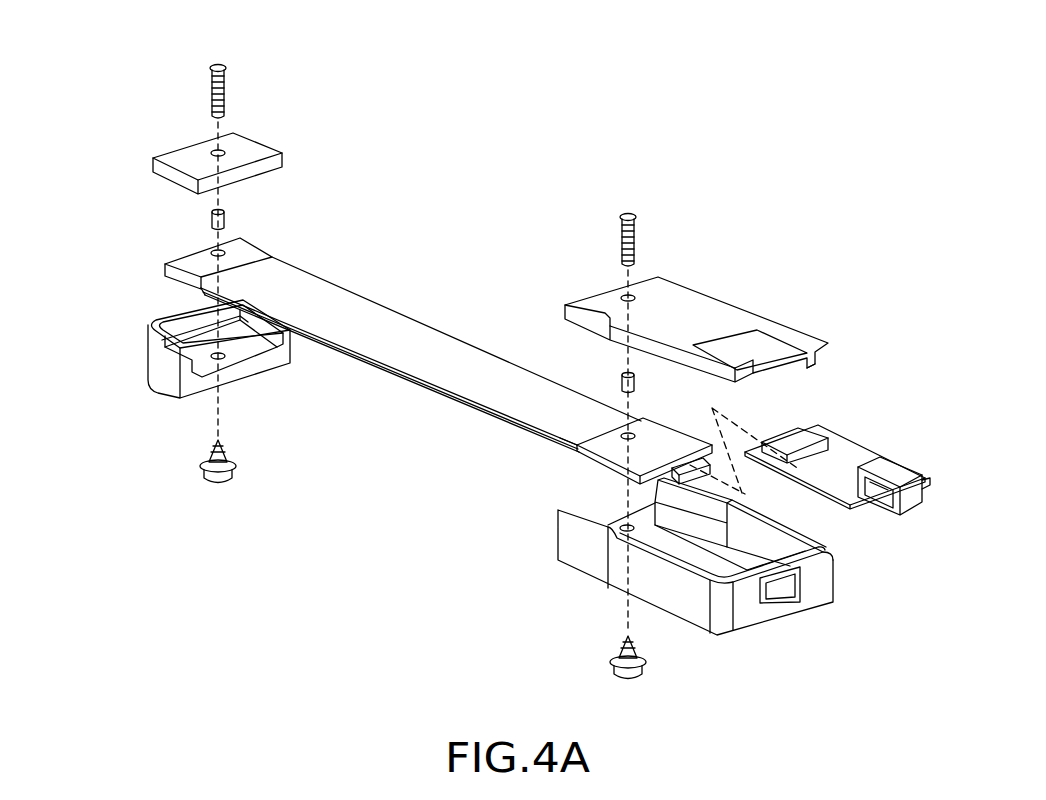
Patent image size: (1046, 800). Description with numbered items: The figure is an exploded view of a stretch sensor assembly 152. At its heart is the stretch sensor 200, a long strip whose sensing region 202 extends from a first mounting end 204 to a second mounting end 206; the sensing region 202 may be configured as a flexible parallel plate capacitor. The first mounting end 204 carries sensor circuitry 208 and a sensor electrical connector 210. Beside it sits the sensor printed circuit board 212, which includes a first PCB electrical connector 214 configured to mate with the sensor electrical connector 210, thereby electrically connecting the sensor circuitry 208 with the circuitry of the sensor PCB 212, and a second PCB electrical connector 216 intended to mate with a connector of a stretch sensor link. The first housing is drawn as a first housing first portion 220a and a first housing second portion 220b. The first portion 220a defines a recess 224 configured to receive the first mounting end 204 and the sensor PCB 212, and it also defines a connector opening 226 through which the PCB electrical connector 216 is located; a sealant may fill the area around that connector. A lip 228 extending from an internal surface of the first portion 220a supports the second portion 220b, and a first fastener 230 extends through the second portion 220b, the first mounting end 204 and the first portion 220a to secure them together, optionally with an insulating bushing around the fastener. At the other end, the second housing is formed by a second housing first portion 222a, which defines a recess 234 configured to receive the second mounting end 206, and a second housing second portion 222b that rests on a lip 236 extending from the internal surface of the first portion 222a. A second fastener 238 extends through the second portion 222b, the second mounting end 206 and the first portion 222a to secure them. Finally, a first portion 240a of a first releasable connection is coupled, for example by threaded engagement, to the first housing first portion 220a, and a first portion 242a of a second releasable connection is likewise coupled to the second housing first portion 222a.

The stretch sensor assembly 152 is at (826, 138).
The stretch sensor 200 is at (396, 300).
The sensing region 202 is at (432, 353).
The first mounting end 204 is at (577, 452).
The second mounting end 206 is at (253, 252).
The sensor circuitry 208 is at (678, 434).
The sensor electrical connector 210 is at (664, 474).
The sensor printed circuit board 212 is at (858, 457).
The PCB electrical connector 214 is at (810, 433).
The PCB electrical connector 216 is at (882, 497).
The first housing first portion 220a is at (670, 600).
The first housing second portion 220b is at (742, 308).
The second housing first portion 222a is at (156, 360).
The second housing second portion 222b is at (248, 152).
The recess 224 is at (740, 492).
The connector opening 226 is at (792, 592).
The lip 228 is at (764, 540).
The first fastener 230 is at (636, 246).
The recess 234 is at (174, 304).
The lip 236 is at (193, 334).
The second fastener 238 is at (228, 96).
The first portion of first releasable connection 240a is at (606, 662).
The first portion of second releasable connection 242a is at (200, 467).